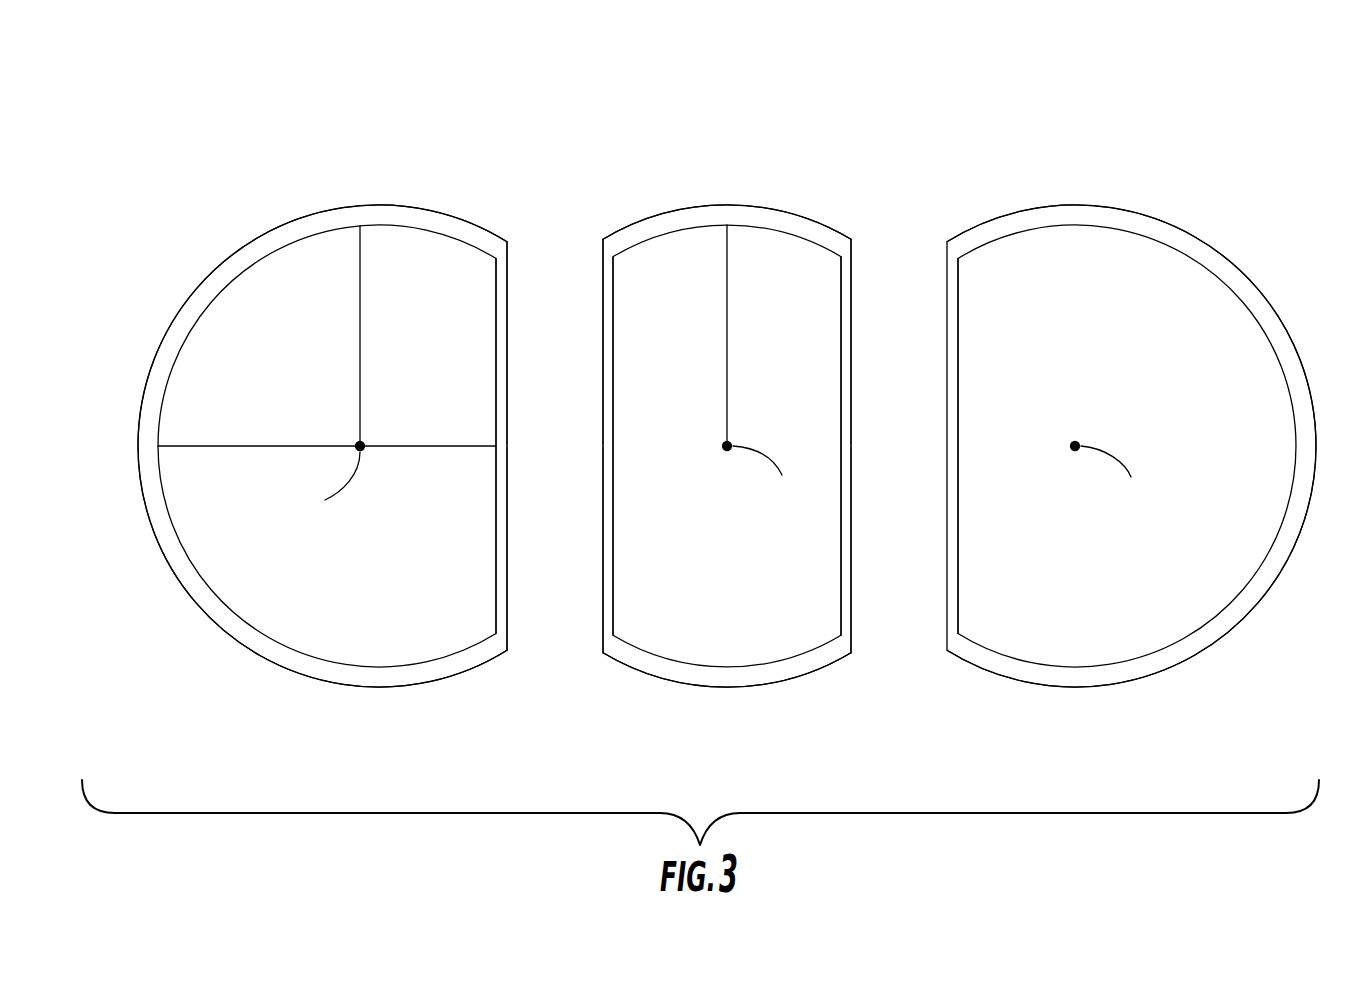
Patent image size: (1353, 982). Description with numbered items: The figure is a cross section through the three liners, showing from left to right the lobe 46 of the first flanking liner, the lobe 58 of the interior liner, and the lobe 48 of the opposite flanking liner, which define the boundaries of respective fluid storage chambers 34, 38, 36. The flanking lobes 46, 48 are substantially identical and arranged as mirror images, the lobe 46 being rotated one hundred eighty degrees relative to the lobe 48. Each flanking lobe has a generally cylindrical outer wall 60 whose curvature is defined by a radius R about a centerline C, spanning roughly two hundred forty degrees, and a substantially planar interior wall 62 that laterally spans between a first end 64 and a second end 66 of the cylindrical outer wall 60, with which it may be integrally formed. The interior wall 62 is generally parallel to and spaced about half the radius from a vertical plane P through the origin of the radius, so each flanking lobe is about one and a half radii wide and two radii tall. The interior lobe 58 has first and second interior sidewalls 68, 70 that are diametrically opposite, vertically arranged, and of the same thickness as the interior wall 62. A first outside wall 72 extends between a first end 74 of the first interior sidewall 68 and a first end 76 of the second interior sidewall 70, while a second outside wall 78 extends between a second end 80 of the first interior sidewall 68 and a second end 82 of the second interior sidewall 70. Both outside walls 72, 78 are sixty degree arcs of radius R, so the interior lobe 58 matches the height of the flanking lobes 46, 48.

The lobe 46 is at (215, 109).
The lobe 58 is at (652, 125).
The lobe 48 is at (1222, 127).
The chamber 34 is at (343, 577).
The chamber 38 is at (709, 577).
The chamber 36 is at (1061, 577).
The cylindrical outer wall 60 is at (310, 680).
The interior wall 62 is at (496, 532).
The first end 64 is at (508, 632).
The second end 66 is at (508, 242).
The first interior sidewall 68 is at (613, 389).
The second interior sidewall 70 is at (841, 467).
The first outside wall 72 is at (727, 688).
The first end 74 is at (603, 653).
The first end 76 is at (851, 653).
The second outside wall 78 is at (770, 205).
The second end 80 is at (603, 239).
The second end 82 is at (851, 240).